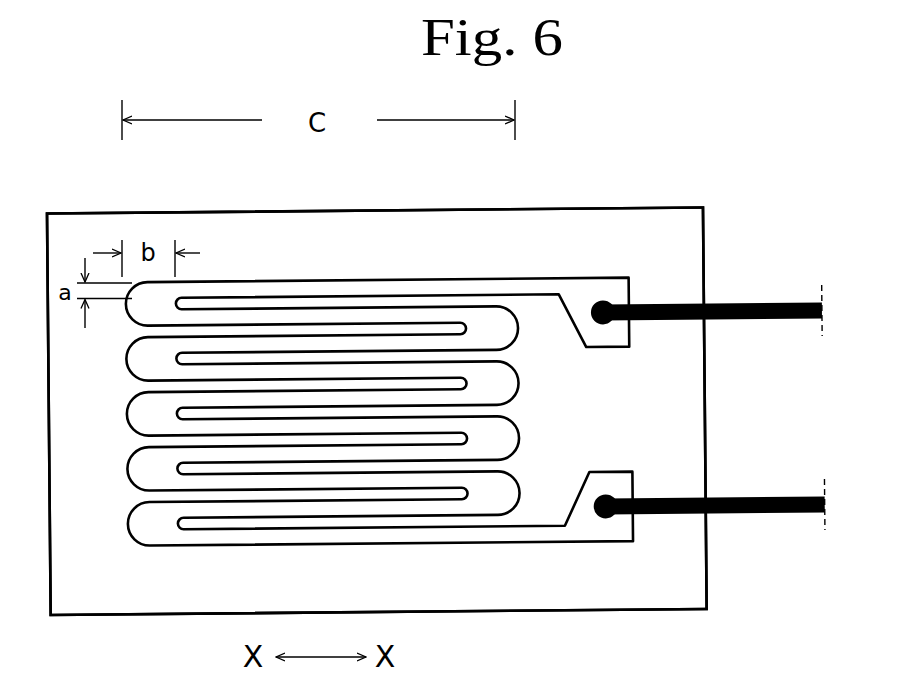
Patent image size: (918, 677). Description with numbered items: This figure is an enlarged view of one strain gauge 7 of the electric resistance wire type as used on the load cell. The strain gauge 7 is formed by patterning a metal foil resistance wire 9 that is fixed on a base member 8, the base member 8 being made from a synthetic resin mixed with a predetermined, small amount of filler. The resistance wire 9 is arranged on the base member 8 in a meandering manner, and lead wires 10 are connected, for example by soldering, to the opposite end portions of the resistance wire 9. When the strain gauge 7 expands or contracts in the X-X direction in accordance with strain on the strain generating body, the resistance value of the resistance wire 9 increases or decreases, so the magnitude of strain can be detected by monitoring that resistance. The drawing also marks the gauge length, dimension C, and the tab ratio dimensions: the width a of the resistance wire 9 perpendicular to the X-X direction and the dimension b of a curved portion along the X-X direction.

The strain gauge 7 is at (583, 197).
The base member 8 is at (367, 209).
The resistance wire 9 is at (264, 282).
The lead wires 10 is at (762, 303).